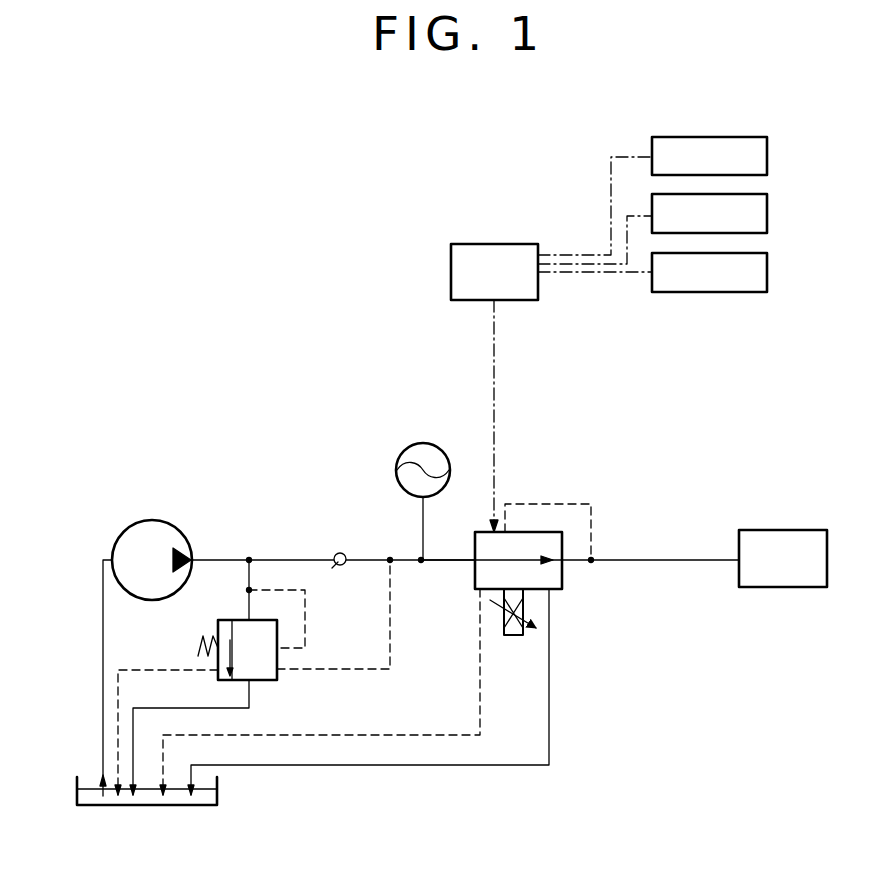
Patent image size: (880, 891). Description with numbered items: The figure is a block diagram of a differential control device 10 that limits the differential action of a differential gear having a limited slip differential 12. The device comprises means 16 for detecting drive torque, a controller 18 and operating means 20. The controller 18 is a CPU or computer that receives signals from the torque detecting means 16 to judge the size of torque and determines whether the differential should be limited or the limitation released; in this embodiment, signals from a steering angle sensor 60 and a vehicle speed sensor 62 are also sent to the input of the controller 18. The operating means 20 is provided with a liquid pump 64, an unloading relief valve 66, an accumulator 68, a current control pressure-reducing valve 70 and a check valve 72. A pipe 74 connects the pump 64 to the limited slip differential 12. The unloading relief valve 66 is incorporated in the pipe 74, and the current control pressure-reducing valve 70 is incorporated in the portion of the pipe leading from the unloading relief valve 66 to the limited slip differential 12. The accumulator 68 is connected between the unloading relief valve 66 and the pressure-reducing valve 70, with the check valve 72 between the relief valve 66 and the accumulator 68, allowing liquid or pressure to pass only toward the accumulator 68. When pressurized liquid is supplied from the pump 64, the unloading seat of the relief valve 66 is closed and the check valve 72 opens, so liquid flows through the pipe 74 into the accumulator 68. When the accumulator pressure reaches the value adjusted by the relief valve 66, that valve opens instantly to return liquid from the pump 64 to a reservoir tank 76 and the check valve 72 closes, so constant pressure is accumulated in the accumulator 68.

The differential control device 10 is at (440, 376).
The limited slip differential 12 is at (768, 530).
The means for detecting drive torque 16 is at (767, 272).
The controller 18 is at (530, 244).
The operating means 20 is at (396, 552).
The steering angle sensor 60 is at (767, 156).
The vehicle speed sensor 62 is at (767, 214).
The liquid pump 64 is at (173, 523).
The unloading relief valve 66 is at (237, 619).
The accumulator 68 is at (408, 444).
The current control pressure-reducing valve 70 is at (562, 578).
The check valve 72 is at (336, 552).
The pipe 74 is at (445, 562).
The reservoir tank 76 is at (157, 805).